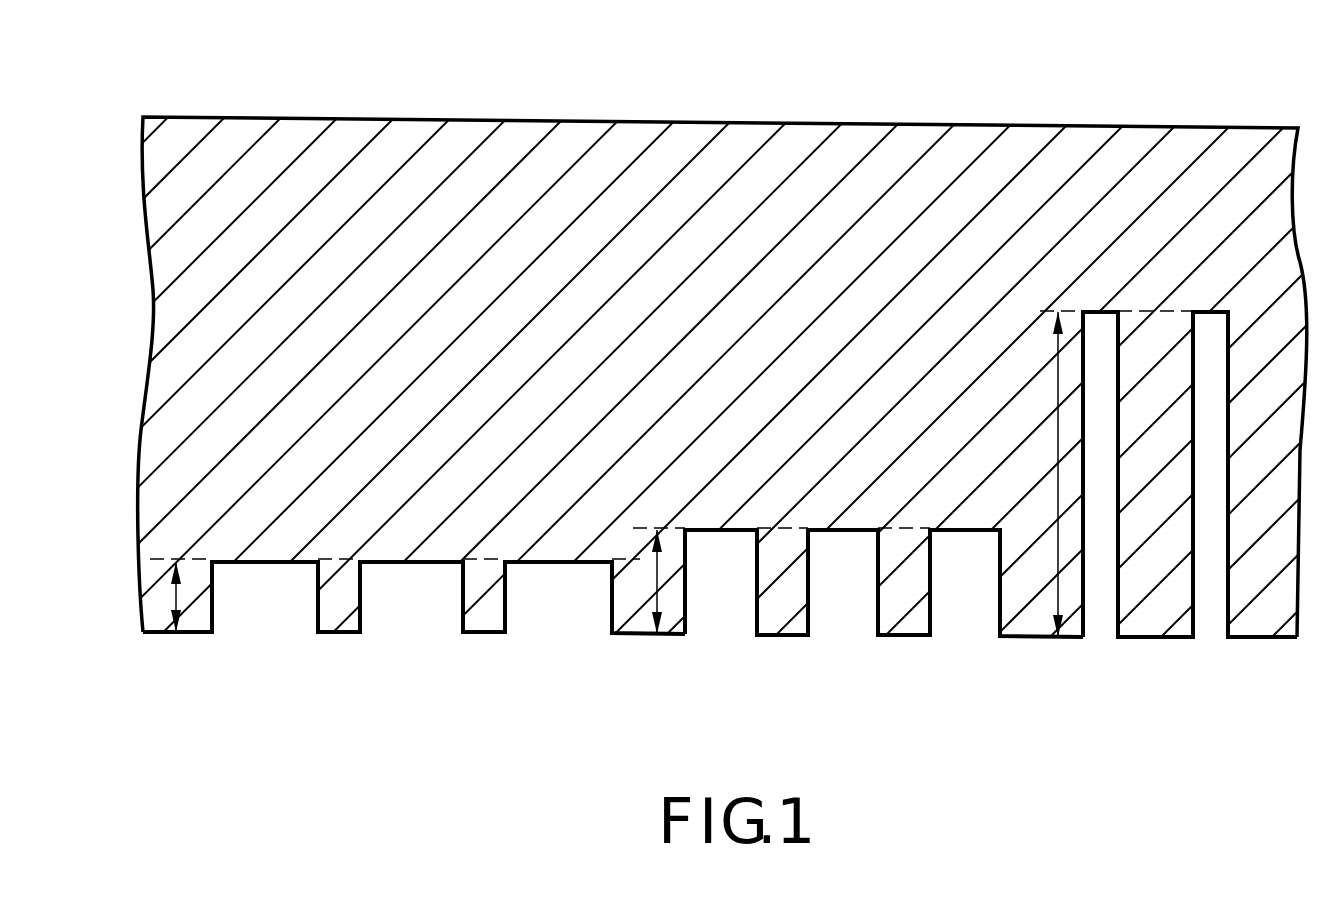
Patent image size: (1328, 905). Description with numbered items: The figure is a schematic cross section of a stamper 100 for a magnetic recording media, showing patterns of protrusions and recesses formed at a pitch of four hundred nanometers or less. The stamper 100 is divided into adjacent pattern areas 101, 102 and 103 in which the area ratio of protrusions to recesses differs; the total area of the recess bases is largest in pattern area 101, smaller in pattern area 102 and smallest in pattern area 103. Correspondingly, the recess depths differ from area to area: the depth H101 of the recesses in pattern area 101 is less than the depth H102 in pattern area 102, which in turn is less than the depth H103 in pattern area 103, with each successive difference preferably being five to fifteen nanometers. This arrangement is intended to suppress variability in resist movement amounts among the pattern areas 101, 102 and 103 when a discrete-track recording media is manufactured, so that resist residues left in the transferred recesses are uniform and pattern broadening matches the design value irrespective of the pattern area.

The stamper 100 is at (556, 84).
The pattern area 101 is at (647, 681).
The pattern area 102 is at (1042, 681).
The pattern area 103 is at (1283, 681).
The depth of recesses H101 is at (173, 627).
The depth of recesses H102 is at (658, 568).
The depth of recesses H103 is at (1026, 474).